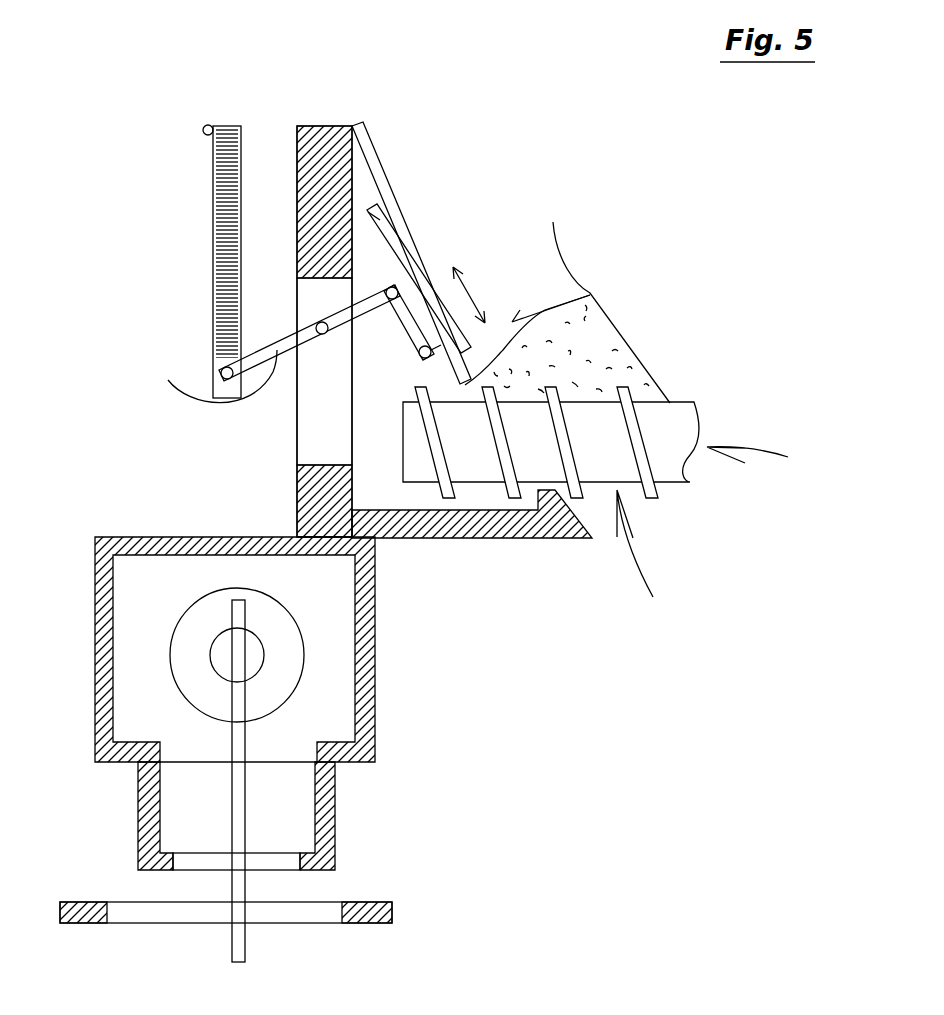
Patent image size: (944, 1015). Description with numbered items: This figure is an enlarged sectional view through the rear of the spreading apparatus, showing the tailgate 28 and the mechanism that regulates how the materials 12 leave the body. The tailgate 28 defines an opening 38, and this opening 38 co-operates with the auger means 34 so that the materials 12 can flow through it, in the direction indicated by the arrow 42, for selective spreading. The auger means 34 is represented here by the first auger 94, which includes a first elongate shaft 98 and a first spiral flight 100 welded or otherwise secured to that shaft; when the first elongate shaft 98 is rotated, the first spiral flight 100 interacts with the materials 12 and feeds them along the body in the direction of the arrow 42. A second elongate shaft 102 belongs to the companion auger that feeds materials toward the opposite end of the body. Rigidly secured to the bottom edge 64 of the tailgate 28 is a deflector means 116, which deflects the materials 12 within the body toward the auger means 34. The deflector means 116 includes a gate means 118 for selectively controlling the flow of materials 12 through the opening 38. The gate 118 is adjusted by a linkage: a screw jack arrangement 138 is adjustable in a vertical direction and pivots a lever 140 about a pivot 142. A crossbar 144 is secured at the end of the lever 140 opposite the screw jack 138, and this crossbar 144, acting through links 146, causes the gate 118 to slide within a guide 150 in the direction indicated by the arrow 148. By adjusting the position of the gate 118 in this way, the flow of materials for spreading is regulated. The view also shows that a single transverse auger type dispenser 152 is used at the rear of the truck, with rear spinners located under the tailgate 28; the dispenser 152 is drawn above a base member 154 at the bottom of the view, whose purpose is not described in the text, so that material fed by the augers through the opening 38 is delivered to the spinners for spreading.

The materials 12 is at (582, 343).
The tailgate 28 is at (318, 140).
The auger means 34 is at (768, 450).
The opening 38 is at (297, 465).
The arrow 42 is at (532, 303).
The bottom edge 64 is at (297, 498).
The first auger 94 is at (646, 563).
The first elongate shaft 98 is at (668, 463).
The first spiral flight 100 is at (570, 433).
The second elongate shaft 102 is at (472, 500).
The deflector means 116 is at (350, 100).
The gate means 118 is at (432, 300).
The screw jack arrangement 138 is at (203, 135).
The lever 140 is at (199, 376).
The pivot 142 is at (290, 335).
The crossbar 144 is at (390, 292).
The links 146 is at (405, 310).
The arrow 148 is at (467, 287).
The guide 150 is at (380, 217).
The single transverse auger type dispenser 152 is at (365, 655).
The mounting plate 154 is at (362, 902).